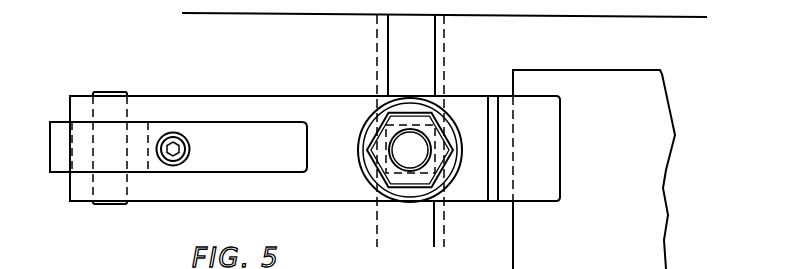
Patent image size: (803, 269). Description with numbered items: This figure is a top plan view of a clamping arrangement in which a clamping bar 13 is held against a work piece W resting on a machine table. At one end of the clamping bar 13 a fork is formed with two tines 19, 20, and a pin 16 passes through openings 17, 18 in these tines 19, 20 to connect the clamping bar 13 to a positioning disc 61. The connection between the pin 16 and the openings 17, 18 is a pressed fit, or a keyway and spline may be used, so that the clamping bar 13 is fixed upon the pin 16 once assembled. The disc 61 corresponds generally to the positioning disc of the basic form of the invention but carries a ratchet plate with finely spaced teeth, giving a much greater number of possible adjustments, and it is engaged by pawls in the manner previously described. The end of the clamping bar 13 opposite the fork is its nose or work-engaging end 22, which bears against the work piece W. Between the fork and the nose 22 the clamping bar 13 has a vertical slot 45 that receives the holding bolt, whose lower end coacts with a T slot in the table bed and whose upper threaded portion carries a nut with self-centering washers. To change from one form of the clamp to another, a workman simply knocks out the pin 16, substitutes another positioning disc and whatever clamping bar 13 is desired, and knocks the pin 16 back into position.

The clamping bar 13 is at (315, 148).
The pin 16 is at (117, 91).
The opening 17 is at (128, 186).
The opening 18 is at (128, 102).
The tine 19 is at (230, 192).
The tine 20 is at (229, 110).
The nose 22 is at (562, 193).
The vertical slot 45 is at (359, 136).
The disc 61 is at (199, 149).
The work piece W is at (594, 169).